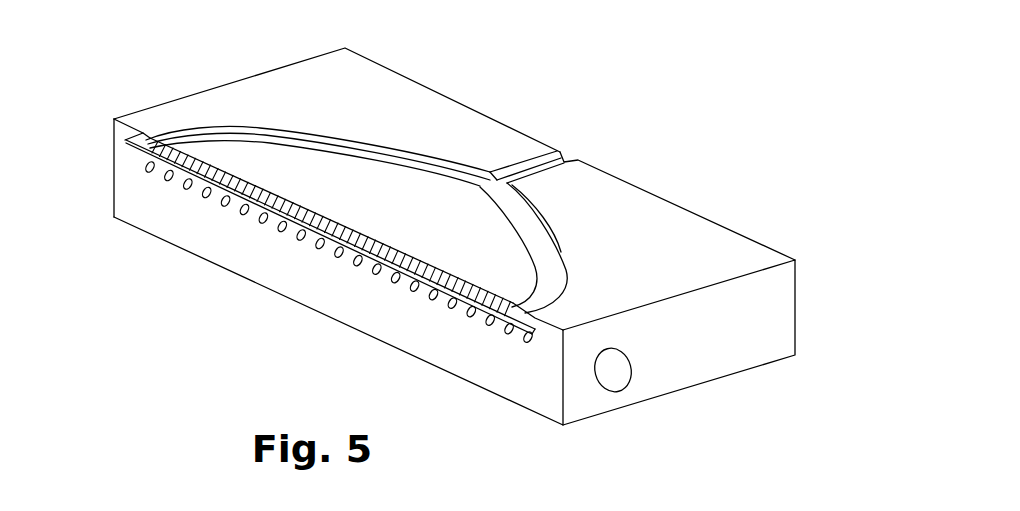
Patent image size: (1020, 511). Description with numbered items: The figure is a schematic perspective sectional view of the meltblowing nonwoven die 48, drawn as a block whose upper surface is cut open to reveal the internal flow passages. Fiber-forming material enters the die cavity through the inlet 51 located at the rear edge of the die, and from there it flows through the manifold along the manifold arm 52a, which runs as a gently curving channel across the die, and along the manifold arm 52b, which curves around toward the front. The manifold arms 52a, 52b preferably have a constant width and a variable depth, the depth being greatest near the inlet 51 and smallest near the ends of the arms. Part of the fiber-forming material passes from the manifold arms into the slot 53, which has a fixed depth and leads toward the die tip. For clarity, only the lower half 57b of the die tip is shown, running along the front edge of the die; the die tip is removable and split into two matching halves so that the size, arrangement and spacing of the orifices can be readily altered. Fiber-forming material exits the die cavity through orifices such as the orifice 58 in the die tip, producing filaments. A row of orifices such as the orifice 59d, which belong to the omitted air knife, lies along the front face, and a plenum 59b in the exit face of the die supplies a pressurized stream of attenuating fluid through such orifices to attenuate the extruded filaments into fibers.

The nonwoven die 48 is at (438, 66).
The inlet 51 is at (565, 158).
The manifold arm 52a is at (357, 157).
The manifold arm 52b is at (550, 253).
The slot 53 is at (232, 157).
The lower half of die tip 57b is at (535, 318).
The orifice 58 is at (397, 275).
The orifice 59d is at (472, 313).
The plenum 59b is at (607, 378).